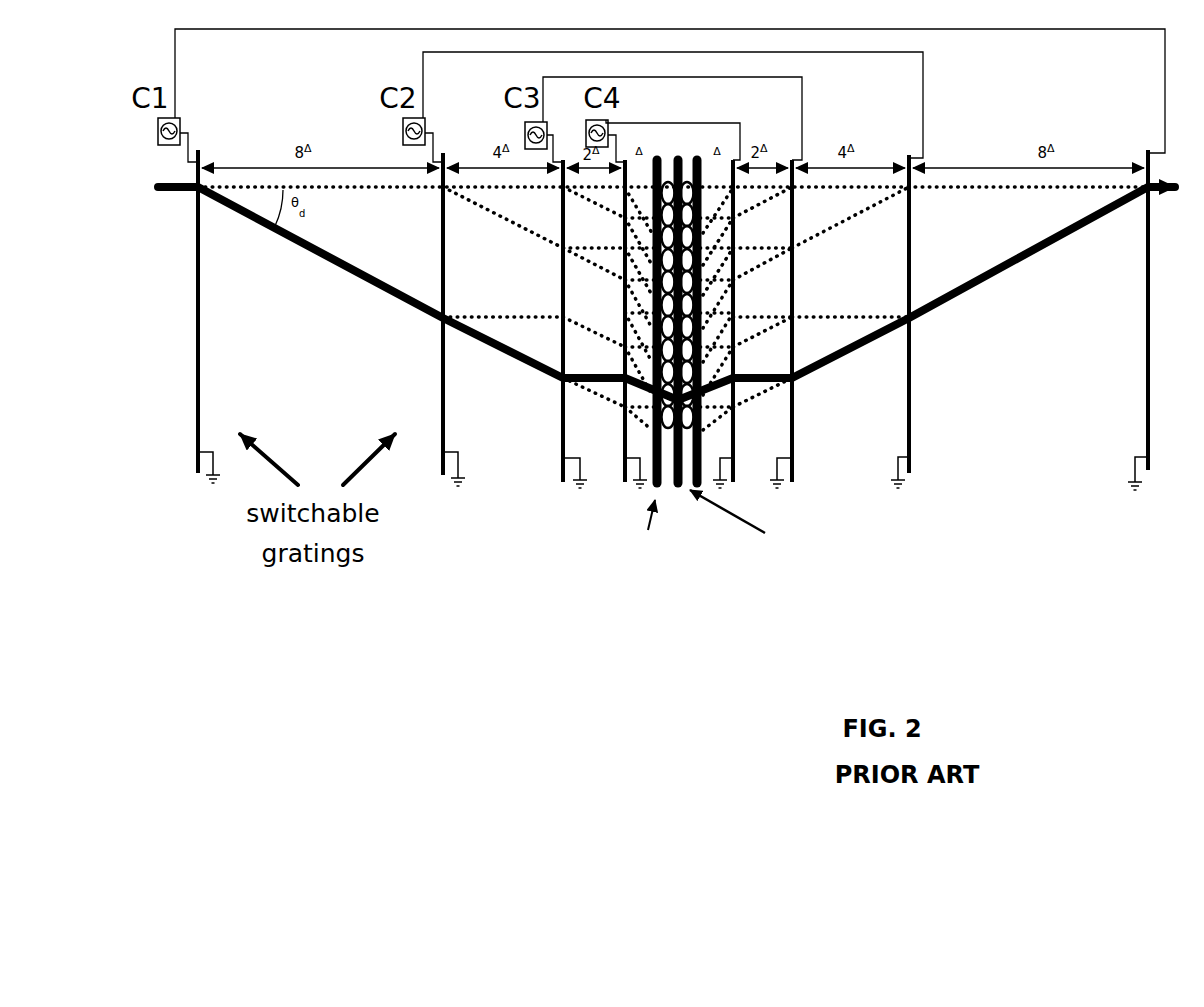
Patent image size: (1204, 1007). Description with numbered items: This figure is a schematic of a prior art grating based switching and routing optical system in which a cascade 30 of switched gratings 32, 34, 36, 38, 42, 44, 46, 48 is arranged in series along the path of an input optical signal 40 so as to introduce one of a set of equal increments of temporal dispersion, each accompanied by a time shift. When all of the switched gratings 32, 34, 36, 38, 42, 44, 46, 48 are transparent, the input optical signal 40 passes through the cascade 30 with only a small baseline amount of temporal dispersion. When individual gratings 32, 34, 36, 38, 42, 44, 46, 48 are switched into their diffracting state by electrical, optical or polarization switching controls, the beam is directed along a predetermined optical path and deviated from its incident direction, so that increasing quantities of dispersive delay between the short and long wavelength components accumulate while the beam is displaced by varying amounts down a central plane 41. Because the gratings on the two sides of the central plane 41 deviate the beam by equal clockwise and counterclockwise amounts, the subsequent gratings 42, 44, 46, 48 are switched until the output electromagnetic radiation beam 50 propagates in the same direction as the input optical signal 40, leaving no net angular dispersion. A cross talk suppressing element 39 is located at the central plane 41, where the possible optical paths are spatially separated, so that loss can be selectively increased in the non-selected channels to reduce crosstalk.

The cascade 30 is at (330, 648).
The switched grating 32 is at (180, 432).
The switched grating 34 is at (438, 437).
The switched grating 36 is at (548, 415).
The switched grating 38 is at (625, 435).
The cross talk suppressing element 39 is at (829, 374).
The input optical signal 40 is at (175, 200).
The central plane 41 is at (678, 497).
The switched grating 42 is at (747, 455).
The switched grating 44 is at (803, 437).
The switched grating 46 is at (913, 420).
The switched grating 48 is at (1133, 417).
The output electromagnetic radiation beam 50 is at (1172, 203).